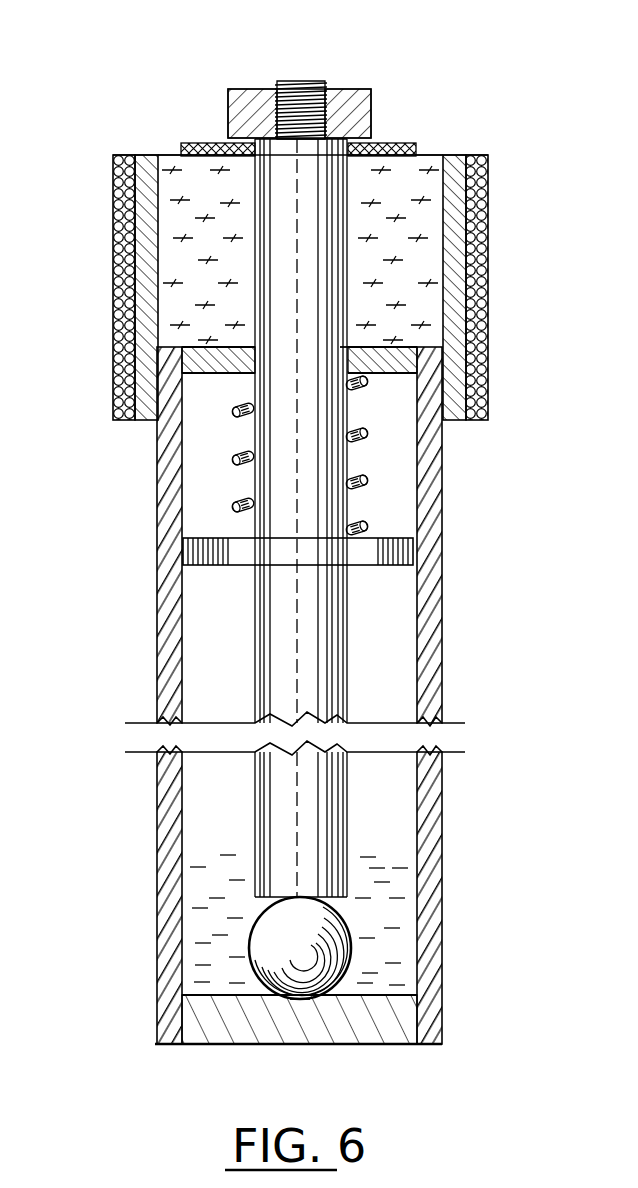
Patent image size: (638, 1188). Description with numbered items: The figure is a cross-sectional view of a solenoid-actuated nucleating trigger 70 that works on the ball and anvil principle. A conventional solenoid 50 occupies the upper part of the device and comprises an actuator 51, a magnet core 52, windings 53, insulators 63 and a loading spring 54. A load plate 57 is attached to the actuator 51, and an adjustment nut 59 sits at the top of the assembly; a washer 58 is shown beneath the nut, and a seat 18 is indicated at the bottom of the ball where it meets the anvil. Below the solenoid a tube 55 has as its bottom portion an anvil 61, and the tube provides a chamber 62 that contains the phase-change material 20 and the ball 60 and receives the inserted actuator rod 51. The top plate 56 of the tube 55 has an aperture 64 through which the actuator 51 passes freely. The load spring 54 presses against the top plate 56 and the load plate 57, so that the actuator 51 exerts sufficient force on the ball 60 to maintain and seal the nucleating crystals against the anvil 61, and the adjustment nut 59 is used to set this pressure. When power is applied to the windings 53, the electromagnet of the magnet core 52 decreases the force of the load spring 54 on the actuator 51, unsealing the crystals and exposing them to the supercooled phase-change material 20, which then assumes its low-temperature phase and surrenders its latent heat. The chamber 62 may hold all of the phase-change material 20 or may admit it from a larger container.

The seat 18 is at (300, 1000).
The phase-change material 20 is at (363, 857).
The solenoid 50 is at (454, 133).
The actuator 51 is at (352, 651).
The magnet core 52 is at (178, 178).
The windings 53 is at (117, 182).
The loading spring 54 is at (362, 437).
The tube 55 is at (430, 516).
The top plate 56 is at (393, 344).
The load plate 57 is at (406, 563).
The washer 58 is at (383, 143).
The adjustment nut 59 is at (243, 87).
The ball 60 is at (337, 948).
The anvil 61 is at (371, 1033).
The chamber 62 is at (200, 890).
The insulators 63 is at (458, 156).
The aperture 64 is at (350, 342).
The solenoid-actuated nucleating trigger 70 is at (363, 85).